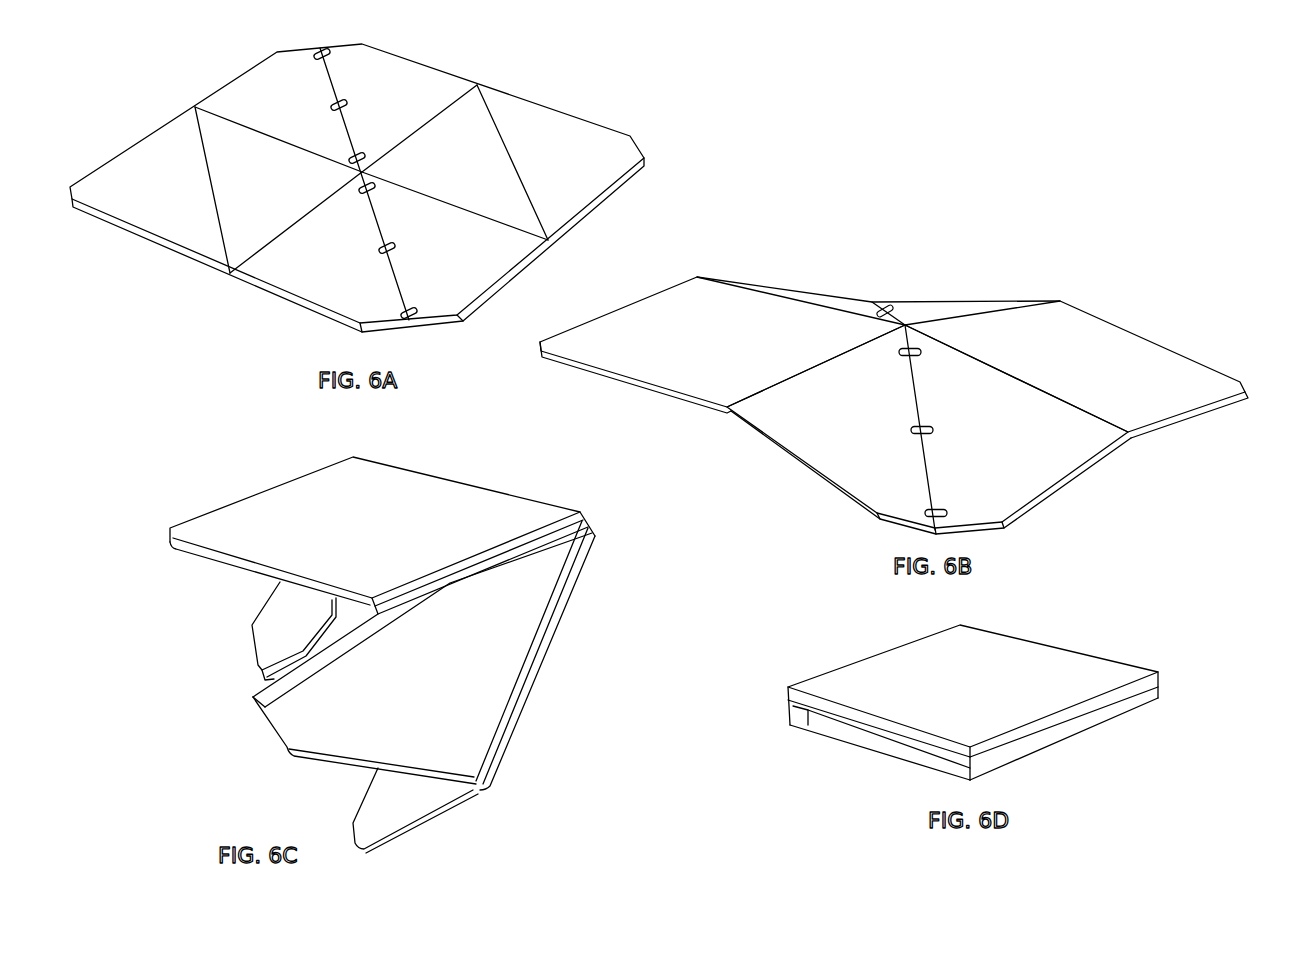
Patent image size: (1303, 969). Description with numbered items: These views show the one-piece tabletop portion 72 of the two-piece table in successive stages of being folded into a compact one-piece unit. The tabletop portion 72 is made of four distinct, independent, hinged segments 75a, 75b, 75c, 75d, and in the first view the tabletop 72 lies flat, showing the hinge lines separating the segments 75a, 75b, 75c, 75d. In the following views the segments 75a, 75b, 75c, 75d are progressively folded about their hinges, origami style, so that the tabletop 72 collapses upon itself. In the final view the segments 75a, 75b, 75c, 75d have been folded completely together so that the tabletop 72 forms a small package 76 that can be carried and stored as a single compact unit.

In FIG. 6A, the tabletop portion 72 is at (528, 107).
In FIG. 6A, the hinged segment 75a is at (157, 247).
In FIG. 6A, the hinged segment 75b is at (290, 300).
In FIG. 6A, the hinged segment 75c is at (570, 222).
In FIG. 6A, the hinged segment 75d is at (230, 85).
In FIG. 6D, the small package 76 is at (1100, 657).